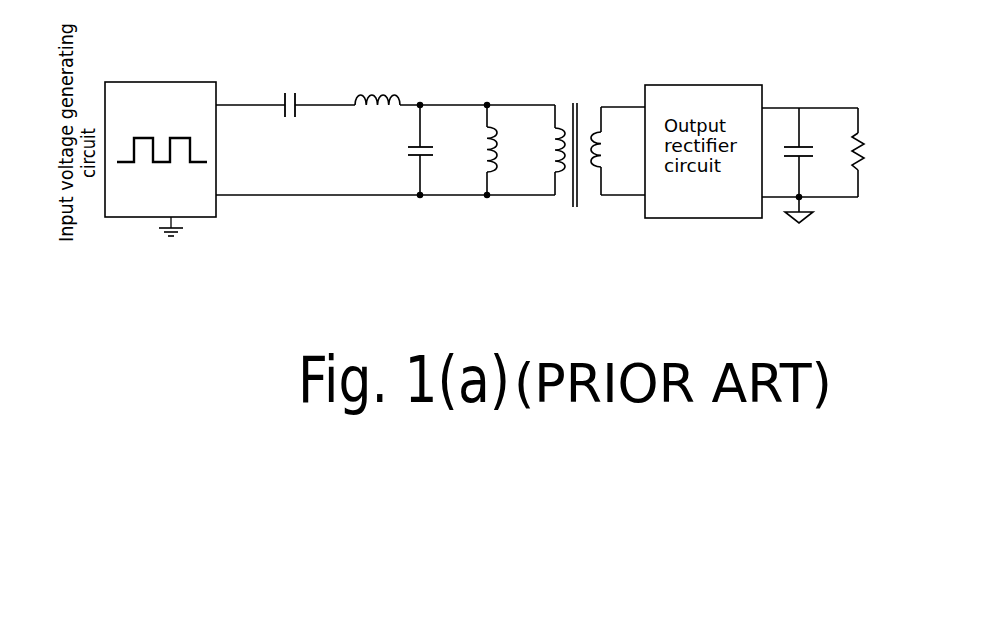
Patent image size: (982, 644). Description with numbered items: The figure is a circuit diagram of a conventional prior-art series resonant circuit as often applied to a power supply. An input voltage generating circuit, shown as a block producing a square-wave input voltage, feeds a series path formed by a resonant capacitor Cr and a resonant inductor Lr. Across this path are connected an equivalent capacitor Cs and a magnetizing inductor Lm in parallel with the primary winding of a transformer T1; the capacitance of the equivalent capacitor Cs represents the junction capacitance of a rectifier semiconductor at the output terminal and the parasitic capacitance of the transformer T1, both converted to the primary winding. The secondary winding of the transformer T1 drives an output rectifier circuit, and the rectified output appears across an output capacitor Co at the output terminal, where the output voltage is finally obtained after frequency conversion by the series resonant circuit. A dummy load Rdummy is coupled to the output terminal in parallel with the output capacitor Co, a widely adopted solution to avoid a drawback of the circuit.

The resonant capacitor Cr is at (287, 119).
The resonant inductor Lr is at (377, 121).
The equivalent capacitor Cs is at (409, 150).
The magnetizing inductor Lm is at (477, 150).
The transformer T1 is at (598, 156).
The output capacitor Co is at (810, 152).
The dummy load Rdummy is at (883, 152).